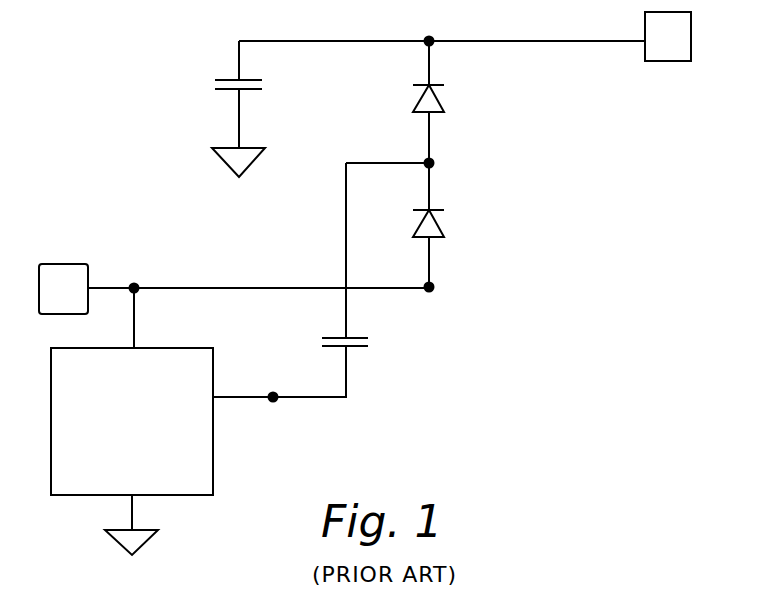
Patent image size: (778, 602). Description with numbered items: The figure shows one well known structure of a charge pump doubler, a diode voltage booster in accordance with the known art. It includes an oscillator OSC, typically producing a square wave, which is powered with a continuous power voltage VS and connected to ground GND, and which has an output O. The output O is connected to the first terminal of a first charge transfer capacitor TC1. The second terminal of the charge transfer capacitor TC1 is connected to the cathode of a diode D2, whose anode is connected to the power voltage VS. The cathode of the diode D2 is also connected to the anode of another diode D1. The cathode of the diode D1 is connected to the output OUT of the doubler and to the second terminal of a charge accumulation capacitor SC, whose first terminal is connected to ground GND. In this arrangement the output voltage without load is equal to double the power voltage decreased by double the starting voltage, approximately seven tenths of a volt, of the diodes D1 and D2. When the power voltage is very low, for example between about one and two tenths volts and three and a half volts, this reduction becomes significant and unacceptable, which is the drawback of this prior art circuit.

The charge accumulation capacitor SC is at (219, 94).
The ground GND is at (185, 351).
The output of the doubler OUT is at (669, 58).
The diode D1 is at (452, 108).
The diode D2 is at (452, 227).
The continuous power voltage VS is at (63, 274).
The first charge transfer capacitor TC1 is at (373, 346).
The output O is at (279, 380).
The oscillator OSC is at (196, 435).